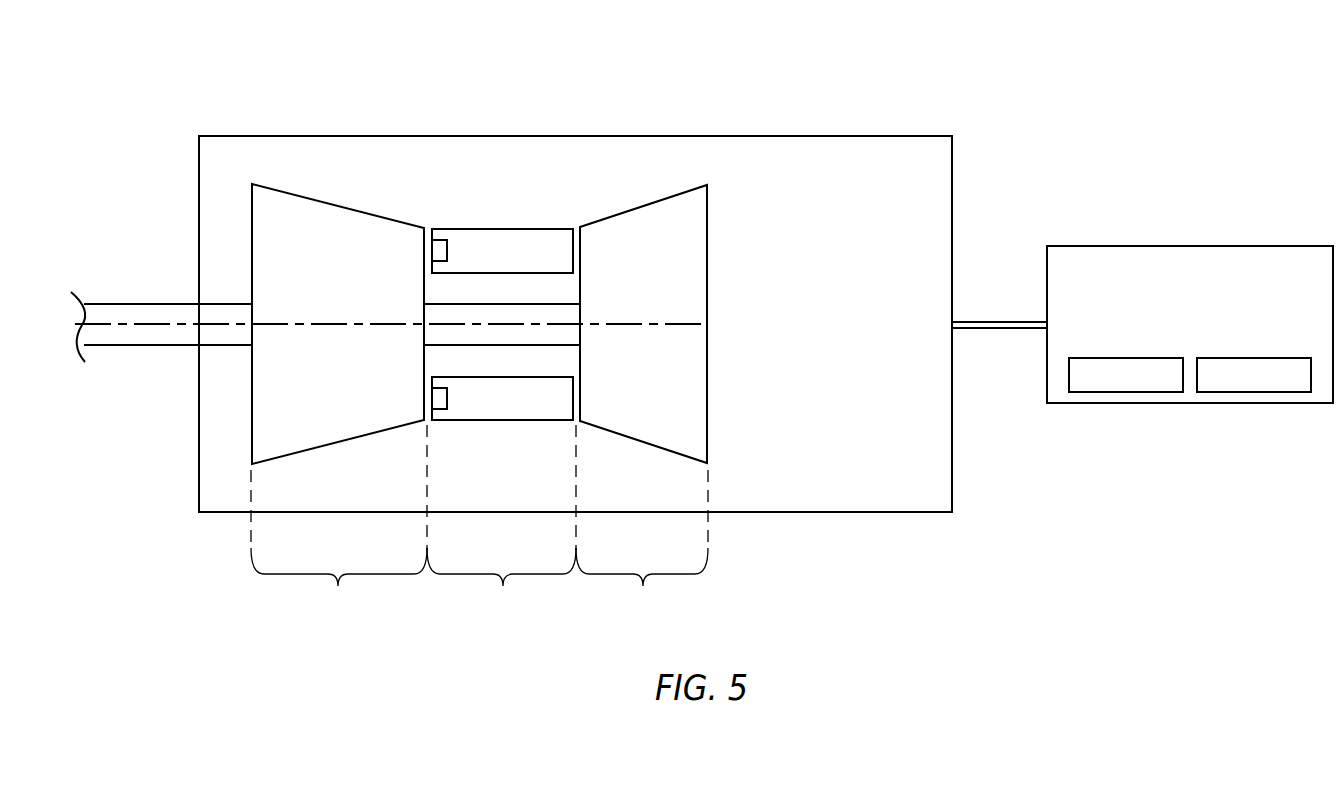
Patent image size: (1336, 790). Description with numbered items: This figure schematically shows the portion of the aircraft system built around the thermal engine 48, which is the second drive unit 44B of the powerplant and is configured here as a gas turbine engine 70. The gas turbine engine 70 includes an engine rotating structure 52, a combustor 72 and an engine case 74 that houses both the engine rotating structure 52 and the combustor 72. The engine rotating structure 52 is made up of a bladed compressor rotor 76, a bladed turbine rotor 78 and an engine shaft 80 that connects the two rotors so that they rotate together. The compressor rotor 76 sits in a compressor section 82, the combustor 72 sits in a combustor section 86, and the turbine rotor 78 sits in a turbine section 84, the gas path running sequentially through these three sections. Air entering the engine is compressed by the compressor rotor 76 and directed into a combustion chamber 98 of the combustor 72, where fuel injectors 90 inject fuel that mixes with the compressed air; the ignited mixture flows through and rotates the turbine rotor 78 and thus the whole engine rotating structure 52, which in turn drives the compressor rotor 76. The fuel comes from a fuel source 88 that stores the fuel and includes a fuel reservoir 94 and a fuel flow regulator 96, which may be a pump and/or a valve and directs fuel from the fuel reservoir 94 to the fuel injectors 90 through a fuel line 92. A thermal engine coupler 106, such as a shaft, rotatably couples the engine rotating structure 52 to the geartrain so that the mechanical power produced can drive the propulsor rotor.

The second drive unit 44B is at (648, 126).
The thermal engine 48 is at (575, 324).
The gas turbine engine 70 is at (575, 324).
The engine case 74 is at (568, 136).
The engine rotating structure 52 is at (234, 193).
The bladed compressor rotor 76 is at (251, 407).
The bladed turbine rotor 78 is at (707, 407).
The engine shaft 80 is at (455, 345).
The combustor 72 is at (533, 229).
The combustion chamber 98 is at (496, 266).
The fuel injectors 90 is at (440, 240).
The thermal engine coupler 106 is at (116, 304).
The compressor section 82 is at (339, 544).
The combustor section 86 is at (501, 522).
The turbine section 84 is at (642, 522).
The fuel line 92 is at (1000, 320).
The fuel source 88 is at (1247, 236).
The fuel flow regulator 96 is at (1126, 392).
The fuel reservoir 94 is at (1265, 392).